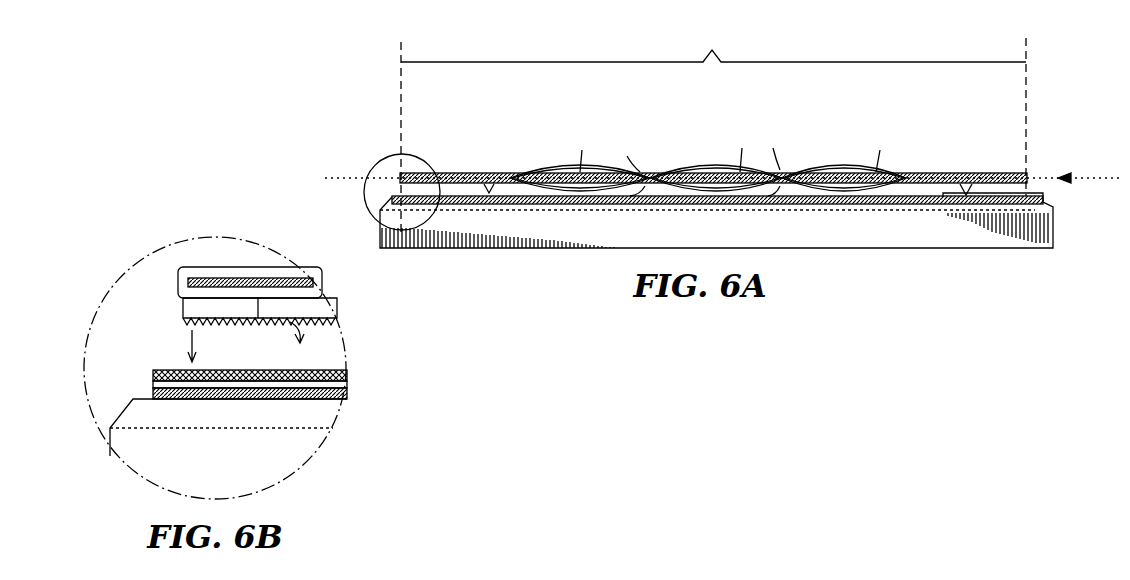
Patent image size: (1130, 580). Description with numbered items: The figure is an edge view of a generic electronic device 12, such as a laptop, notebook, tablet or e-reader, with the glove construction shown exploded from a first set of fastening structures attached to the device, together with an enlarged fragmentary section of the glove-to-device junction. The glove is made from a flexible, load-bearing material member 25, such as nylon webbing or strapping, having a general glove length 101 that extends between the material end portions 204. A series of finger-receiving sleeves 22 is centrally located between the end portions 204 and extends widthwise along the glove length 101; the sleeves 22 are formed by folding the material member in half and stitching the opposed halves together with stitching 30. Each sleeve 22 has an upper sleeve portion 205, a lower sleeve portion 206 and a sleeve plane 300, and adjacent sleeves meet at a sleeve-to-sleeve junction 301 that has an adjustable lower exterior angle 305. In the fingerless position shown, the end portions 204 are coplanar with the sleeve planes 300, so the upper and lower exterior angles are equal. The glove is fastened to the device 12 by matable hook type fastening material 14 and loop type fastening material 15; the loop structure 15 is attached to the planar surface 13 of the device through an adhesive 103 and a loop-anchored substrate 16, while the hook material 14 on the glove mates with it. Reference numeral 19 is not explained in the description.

In FIG. 6A, the glove length 101 is at (713, 45).
In FIG. 6A, the electronic device 12 is at (1026, 250).
In FIG. 6B, the electronic device 12 is at (120, 440).
In FIG. 6A, the planar surface 13 is at (930, 197).
In FIG. 6B, the planar surface 13 is at (140, 398).
In FIG. 6A, the hook type fastening material 14 is at (492, 176).
In FIG. 6B, the hook type fastening material 14 is at (303, 336).
In FIG. 6A, the loop type fastening material 15 is at (473, 205).
In FIG. 6B, the loop type fastening material 15 is at (285, 355).
In FIG. 6A, the loop-anchored substrate 16 is at (713, 178).
In FIG. 6B, the loop-anchored substrate 16 is at (347, 384).
In FIG. 6A, the fins 19 is at (380, 234).
In FIG. 6B, the fins 19 is at (110, 417).
In FIG. 6A, the finger-receiving sleeves 22 is at (556, 168).
In FIG. 6A, the flexible, load-bearing material member 25 is at (520, 192).
In FIG. 6B, the flexible, load-bearing material member 25 is at (228, 280).
In FIG. 6A, the stitching 30 is at (512, 177).
In FIG. 6B, the adhesive 103 is at (347, 396).
In FIG. 6A, the material end portions 204 is at (457, 178).
In FIG. 6B, the material end portions 204 is at (200, 270).
In FIG. 6A, the upper sleeve portion 205 is at (603, 170).
In FIG. 6A, the lower sleeve portion 206 is at (862, 185).
In FIG. 6A, the sleeve plane 300 is at (734, 152).
In FIG. 6A, the first sleeve-to-sleeve junction 301 is at (700, 154).
In FIG. 6A, the lower exterior angle 305 is at (694, 195).